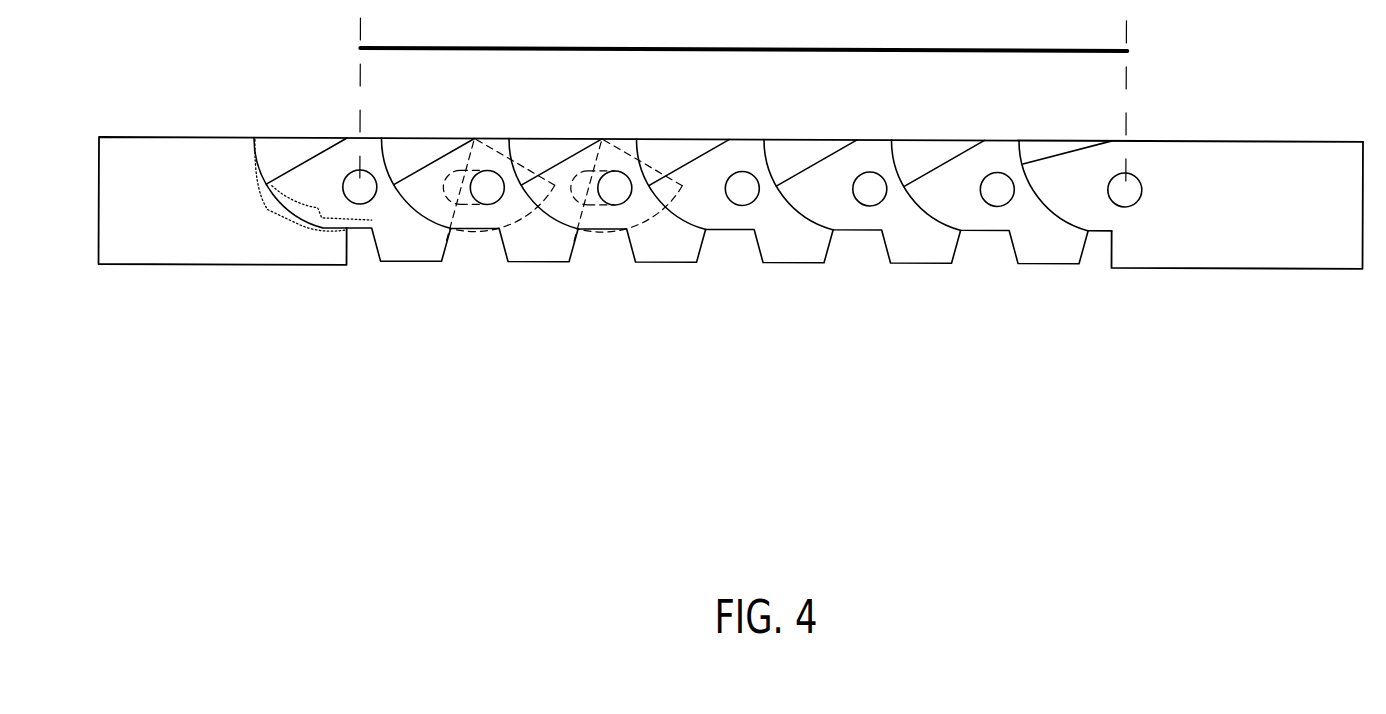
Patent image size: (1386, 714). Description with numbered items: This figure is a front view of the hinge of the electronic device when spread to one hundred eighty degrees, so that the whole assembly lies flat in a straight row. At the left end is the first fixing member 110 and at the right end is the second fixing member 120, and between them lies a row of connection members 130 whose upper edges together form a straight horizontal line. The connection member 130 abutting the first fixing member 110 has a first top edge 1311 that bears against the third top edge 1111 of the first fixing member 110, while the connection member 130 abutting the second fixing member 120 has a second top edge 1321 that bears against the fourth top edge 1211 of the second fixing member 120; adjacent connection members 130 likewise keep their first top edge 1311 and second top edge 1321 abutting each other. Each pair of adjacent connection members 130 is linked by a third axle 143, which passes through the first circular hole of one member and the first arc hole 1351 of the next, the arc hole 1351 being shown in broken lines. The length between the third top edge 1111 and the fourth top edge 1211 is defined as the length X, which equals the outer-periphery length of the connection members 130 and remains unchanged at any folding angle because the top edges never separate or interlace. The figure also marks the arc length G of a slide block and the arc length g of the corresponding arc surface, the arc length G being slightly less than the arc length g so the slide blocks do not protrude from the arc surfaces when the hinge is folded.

The first fixing member 110 is at (203, 240).
The second fixing member 120 is at (1193, 243).
The connection members 130 is at (640, 250).
The third top edge 1111 is at (347, 138).
The first top edge 1311 is at (734, 166).
The second top edge 1321 is at (474, 138).
The fourth top edge 1211 is at (1110, 141).
The first arc hole 1351 is at (475, 138).
The third axle 143 is at (487, 188).
The length X is at (744, 104).
The arc length G is at (322, 199).
The arc length g is at (298, 186).